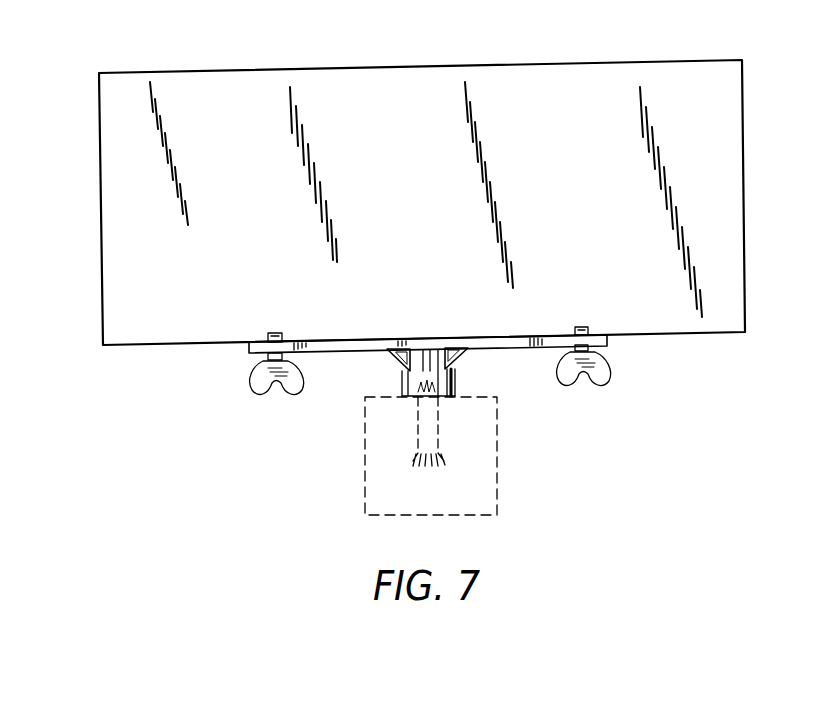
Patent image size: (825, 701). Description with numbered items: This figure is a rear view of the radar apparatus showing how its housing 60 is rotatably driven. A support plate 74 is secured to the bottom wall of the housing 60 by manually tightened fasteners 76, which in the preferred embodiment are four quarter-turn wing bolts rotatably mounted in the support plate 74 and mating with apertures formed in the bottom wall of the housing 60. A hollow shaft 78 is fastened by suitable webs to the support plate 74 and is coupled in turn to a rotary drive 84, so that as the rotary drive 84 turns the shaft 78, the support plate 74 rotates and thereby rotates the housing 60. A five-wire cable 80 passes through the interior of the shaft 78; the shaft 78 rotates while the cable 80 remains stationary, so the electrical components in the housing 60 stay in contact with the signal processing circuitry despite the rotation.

The housing 60 is at (752, 281).
The support plate 74 is at (334, 352).
The fasteners 76 is at (271, 384).
The hollow shaft 78 is at (455, 381).
The five-wire cable 80 is at (440, 442).
The rotary drive 84 is at (497, 478).